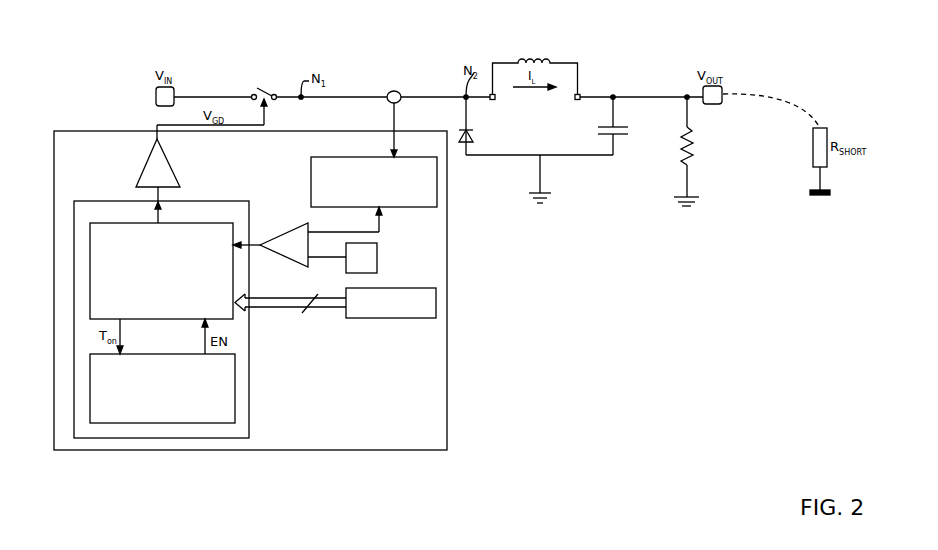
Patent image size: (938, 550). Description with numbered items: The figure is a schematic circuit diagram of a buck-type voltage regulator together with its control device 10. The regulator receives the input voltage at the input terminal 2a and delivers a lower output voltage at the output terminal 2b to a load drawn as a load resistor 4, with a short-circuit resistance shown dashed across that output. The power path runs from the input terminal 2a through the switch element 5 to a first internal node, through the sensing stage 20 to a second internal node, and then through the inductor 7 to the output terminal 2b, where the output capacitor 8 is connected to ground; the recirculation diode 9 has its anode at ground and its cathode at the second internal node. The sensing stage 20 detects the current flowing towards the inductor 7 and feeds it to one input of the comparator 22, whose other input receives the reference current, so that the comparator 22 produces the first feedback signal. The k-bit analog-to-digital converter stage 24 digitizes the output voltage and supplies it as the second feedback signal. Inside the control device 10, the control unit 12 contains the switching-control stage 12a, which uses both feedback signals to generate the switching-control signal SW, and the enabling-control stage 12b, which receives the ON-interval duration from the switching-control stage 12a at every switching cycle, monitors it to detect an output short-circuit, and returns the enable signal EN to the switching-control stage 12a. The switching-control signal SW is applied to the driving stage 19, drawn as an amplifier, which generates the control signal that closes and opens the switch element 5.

The input terminal 2a is at (156, 95).
The output terminal 2b is at (713, 101).
The load resistor 4 is at (694, 150).
The switch element 5 is at (265, 86).
The inductor 7 is at (537, 58).
The output capacitor 8 is at (625, 136).
The recirculation diode 9 is at (472, 139).
The control device 10 is at (354, 456).
The control unit 12 is at (96, 194).
The switching-control stage 12a is at (100, 241).
The enabling-control stage 12b is at (235, 373).
The driver amplifier 19 is at (167, 165).
The sensing stage 20 is at (311, 171).
The comparator 22 is at (291, 236).
The k-bit analog-to-digital converter stage 24 is at (430, 318).